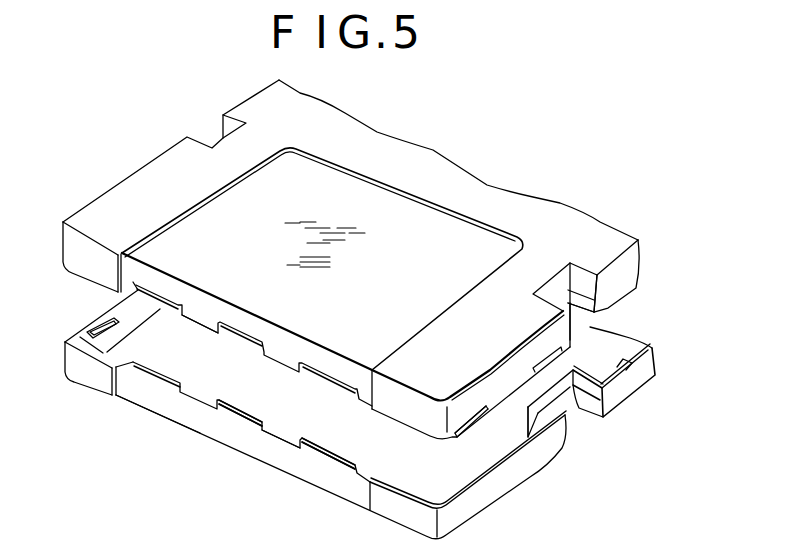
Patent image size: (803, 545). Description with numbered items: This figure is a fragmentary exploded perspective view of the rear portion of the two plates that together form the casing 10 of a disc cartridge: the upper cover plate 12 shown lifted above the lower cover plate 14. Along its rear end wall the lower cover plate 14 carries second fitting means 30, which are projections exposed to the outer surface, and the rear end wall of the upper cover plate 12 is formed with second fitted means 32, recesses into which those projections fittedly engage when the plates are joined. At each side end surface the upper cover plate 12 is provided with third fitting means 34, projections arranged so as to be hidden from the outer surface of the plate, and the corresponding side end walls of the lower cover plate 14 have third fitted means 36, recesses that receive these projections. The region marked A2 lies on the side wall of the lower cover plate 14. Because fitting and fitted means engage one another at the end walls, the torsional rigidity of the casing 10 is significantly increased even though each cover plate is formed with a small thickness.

The casing 10 is at (658, 240).
The upper cover plate 12 is at (315, 115).
The lower cover plate 14 is at (490, 493).
The second fitting means 30 is at (230, 417).
The second fitted means 32 is at (237, 340).
The third fitting means 34 is at (627, 295).
The third fitted means 36 is at (93, 321).
The side wall surface A2 is at (138, 392).